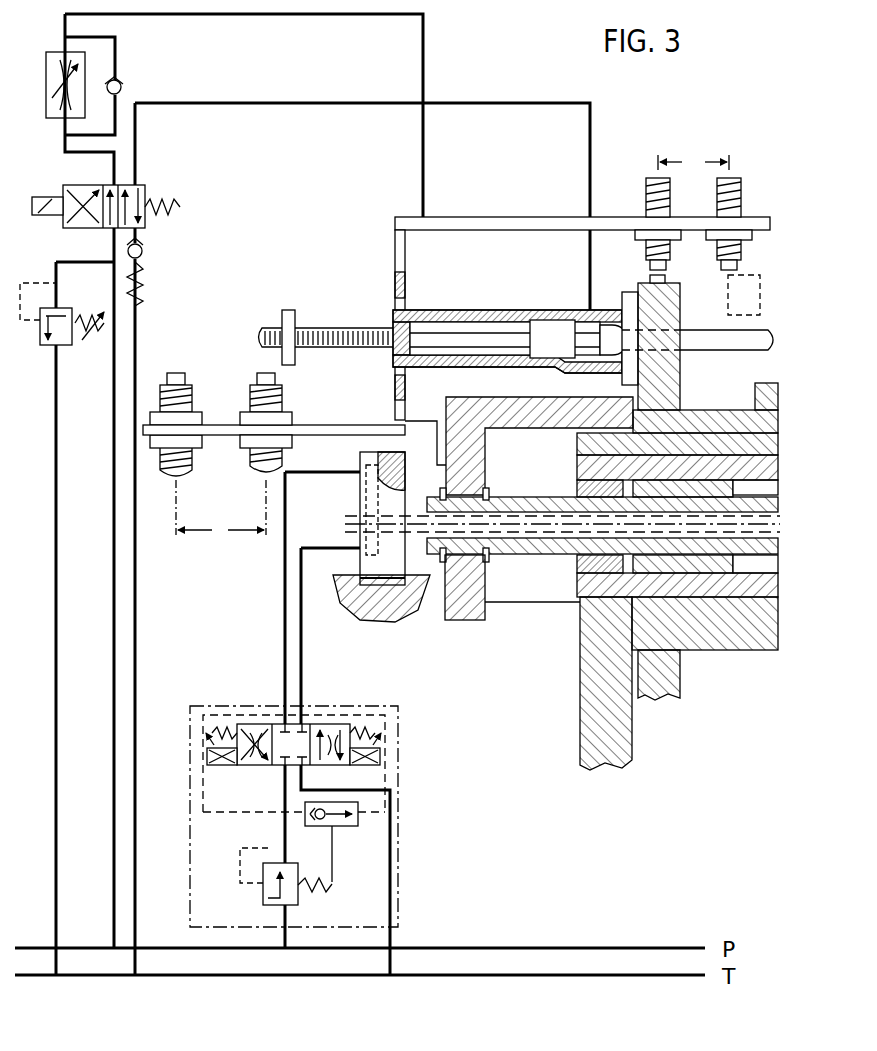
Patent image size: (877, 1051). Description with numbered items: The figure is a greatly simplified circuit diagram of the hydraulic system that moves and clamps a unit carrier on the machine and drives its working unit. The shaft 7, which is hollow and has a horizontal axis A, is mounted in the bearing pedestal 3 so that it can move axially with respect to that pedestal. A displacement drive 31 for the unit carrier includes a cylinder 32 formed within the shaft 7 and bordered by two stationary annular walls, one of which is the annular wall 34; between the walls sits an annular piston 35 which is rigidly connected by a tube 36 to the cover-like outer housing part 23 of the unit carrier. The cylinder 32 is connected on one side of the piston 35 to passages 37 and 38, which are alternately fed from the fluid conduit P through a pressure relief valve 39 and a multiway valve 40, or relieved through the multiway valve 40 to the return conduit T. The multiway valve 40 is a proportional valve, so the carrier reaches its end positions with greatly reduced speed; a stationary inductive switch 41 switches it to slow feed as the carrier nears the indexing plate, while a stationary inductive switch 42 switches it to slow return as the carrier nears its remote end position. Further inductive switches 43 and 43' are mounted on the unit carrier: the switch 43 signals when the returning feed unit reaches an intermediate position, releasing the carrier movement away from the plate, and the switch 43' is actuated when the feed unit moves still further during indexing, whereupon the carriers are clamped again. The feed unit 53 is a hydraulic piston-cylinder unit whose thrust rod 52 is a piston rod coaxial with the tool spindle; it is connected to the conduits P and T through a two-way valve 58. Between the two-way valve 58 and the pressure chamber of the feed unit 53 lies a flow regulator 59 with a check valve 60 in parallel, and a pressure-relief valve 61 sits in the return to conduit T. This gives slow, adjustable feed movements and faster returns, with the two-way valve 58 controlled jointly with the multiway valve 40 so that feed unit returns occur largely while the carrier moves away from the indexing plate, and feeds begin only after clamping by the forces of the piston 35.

The bearing pedestal 3 is at (592, 723).
The shaft 7 is at (732, 583).
The outer housing part 23 is at (466, 605).
The displacement drive 31 is at (700, 575).
The cylinder 32 is at (768, 572).
The annular wall 34 is at (577, 563).
The annular piston 35 is at (708, 483).
The tube 36 is at (541, 508).
The passage 37 is at (492, 517).
The passage 38 is at (513, 532).
The pressure relief valve 39 is at (298, 898).
The multiway valve 40 is at (378, 725).
The inductive switch 41 is at (647, 190).
The inductive switch 42 is at (741, 190).
The inductive switch 43 is at (274, 422).
The inductive switch 43' is at (192, 404).
The thrust rod 52 is at (700, 330).
The feed unit 53 is at (473, 308).
The two-way valve 58 is at (141, 190).
The flow regulator 59 is at (62, 118).
The check valve 60 is at (120, 80).
The pressure-relief valve 61 is at (62, 342).
The axis A is at (357, 524).